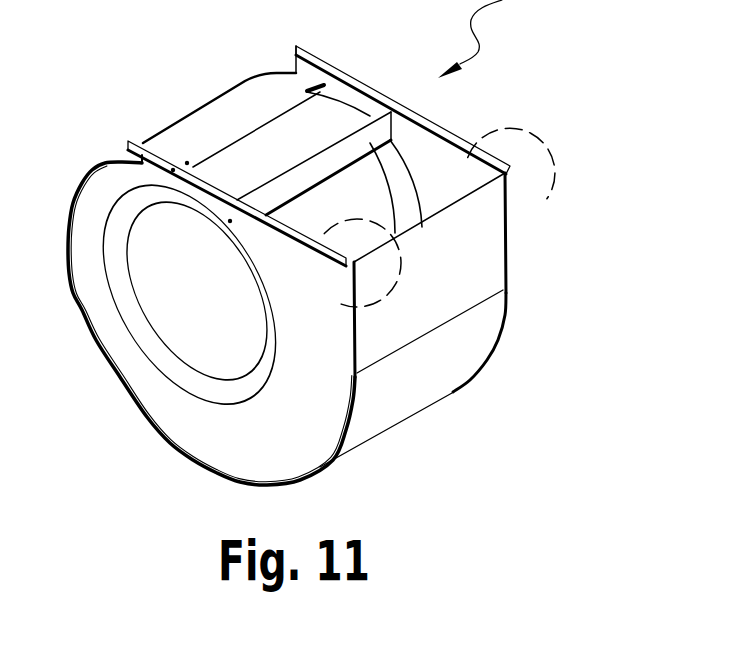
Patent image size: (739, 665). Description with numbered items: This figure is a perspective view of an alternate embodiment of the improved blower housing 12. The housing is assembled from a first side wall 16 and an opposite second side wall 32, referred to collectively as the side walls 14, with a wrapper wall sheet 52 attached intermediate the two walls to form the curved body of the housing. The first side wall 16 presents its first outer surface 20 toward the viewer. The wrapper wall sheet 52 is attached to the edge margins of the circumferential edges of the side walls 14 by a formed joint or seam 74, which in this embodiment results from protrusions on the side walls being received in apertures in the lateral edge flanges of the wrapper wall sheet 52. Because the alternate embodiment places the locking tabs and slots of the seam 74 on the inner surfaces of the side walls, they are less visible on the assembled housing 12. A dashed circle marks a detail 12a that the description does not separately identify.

The improved blower housing 12 is at (547, 199).
The housing flange end 12a is at (326, 238).
The side walls 14 is at (201, 319).
The first side wall 16 is at (201, 319).
The first outer surface 20 is at (224, 439).
The second side wall 32 is at (448, 142).
The wrapper wall sheet 52 is at (437, 372).
The formed joint or seam 74 is at (506, 290).